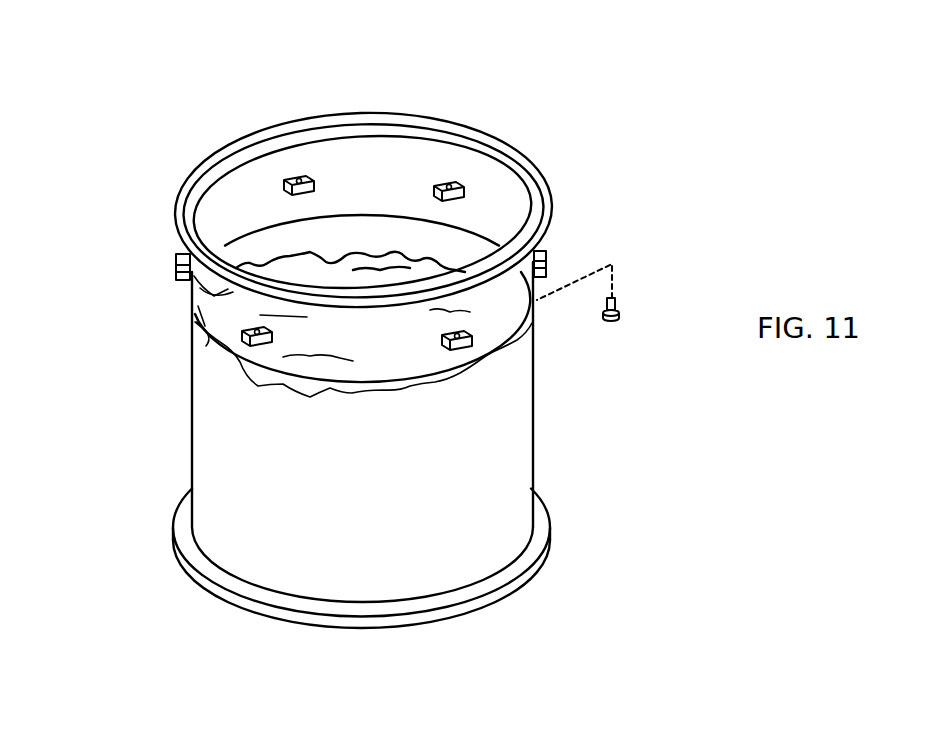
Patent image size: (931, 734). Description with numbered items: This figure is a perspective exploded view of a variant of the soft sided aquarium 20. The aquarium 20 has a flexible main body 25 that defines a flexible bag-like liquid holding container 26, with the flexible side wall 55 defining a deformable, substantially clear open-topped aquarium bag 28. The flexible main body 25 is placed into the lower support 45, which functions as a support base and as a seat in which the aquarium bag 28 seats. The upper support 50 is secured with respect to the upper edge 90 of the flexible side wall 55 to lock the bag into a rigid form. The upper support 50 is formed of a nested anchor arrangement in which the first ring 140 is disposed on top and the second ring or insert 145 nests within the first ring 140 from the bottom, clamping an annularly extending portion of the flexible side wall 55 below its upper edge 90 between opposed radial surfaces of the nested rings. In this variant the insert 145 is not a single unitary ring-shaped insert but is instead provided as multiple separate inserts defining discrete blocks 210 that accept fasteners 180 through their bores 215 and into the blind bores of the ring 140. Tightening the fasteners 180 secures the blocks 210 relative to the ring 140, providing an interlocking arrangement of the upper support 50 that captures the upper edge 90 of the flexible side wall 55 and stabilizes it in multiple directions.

The soft sided aquarium 20 is at (465, 62).
The liquid holding container 26 is at (488, 190).
The aquarium bag 28 is at (178, 450).
The first ring 140 is at (279, 119).
The upper support 50 is at (161, 212).
The second ring 145 is at (88, 290).
The block 210 is at (168, 278).
The bore 215 is at (447, 190).
The upper edge 90 is at (193, 321).
The flexible main body 25 is at (545, 348).
The flexible side wall 55 is at (526, 396).
The lower support 45 is at (541, 507).
The fastener 180 is at (621, 312).